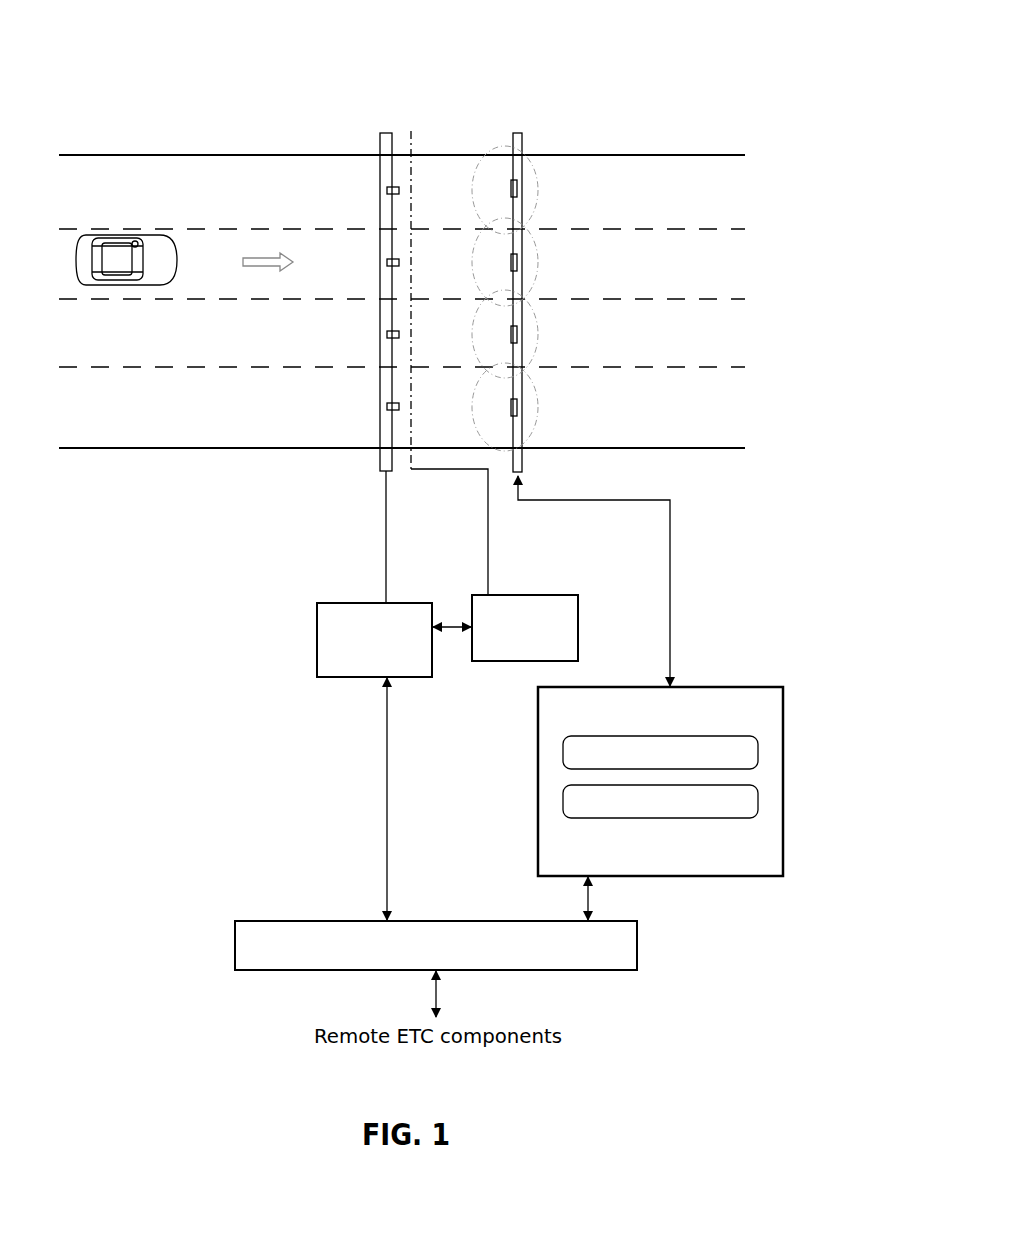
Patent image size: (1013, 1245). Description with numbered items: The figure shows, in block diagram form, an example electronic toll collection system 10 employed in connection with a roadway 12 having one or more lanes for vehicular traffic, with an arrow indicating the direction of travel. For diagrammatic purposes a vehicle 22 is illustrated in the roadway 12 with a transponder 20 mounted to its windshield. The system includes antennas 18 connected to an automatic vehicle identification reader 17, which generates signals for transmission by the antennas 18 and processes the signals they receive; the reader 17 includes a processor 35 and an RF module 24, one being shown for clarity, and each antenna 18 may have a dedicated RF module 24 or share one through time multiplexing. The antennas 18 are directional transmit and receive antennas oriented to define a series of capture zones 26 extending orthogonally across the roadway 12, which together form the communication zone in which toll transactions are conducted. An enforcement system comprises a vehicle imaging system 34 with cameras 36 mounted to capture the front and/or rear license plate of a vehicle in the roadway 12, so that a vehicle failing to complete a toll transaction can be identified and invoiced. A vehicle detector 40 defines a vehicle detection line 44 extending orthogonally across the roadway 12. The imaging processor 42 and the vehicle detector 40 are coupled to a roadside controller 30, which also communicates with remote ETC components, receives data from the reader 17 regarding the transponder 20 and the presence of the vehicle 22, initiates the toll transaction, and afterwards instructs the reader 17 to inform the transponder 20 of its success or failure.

The electronic toll collection system 10 is at (203, 62).
The roadway 12 is at (248, 183).
The automatic vehicle identification reader 17 is at (610, 686).
The antennas 18 is at (520, 190).
The transponder 20 is at (139, 243).
The vehicle 22 is at (147, 285).
The radio frequency module 24 is at (720, 736).
The capture zones 26 is at (505, 298).
The roadside controller 30 is at (234, 947).
The vehicle imaging system 34 is at (389, 122).
The processor 35 is at (563, 800).
The cameras 36 is at (390, 256).
The vehicle detector 40 is at (490, 661).
The imaging processor 42 is at (418, 677).
The vehicle detection line 44 is at (412, 147).